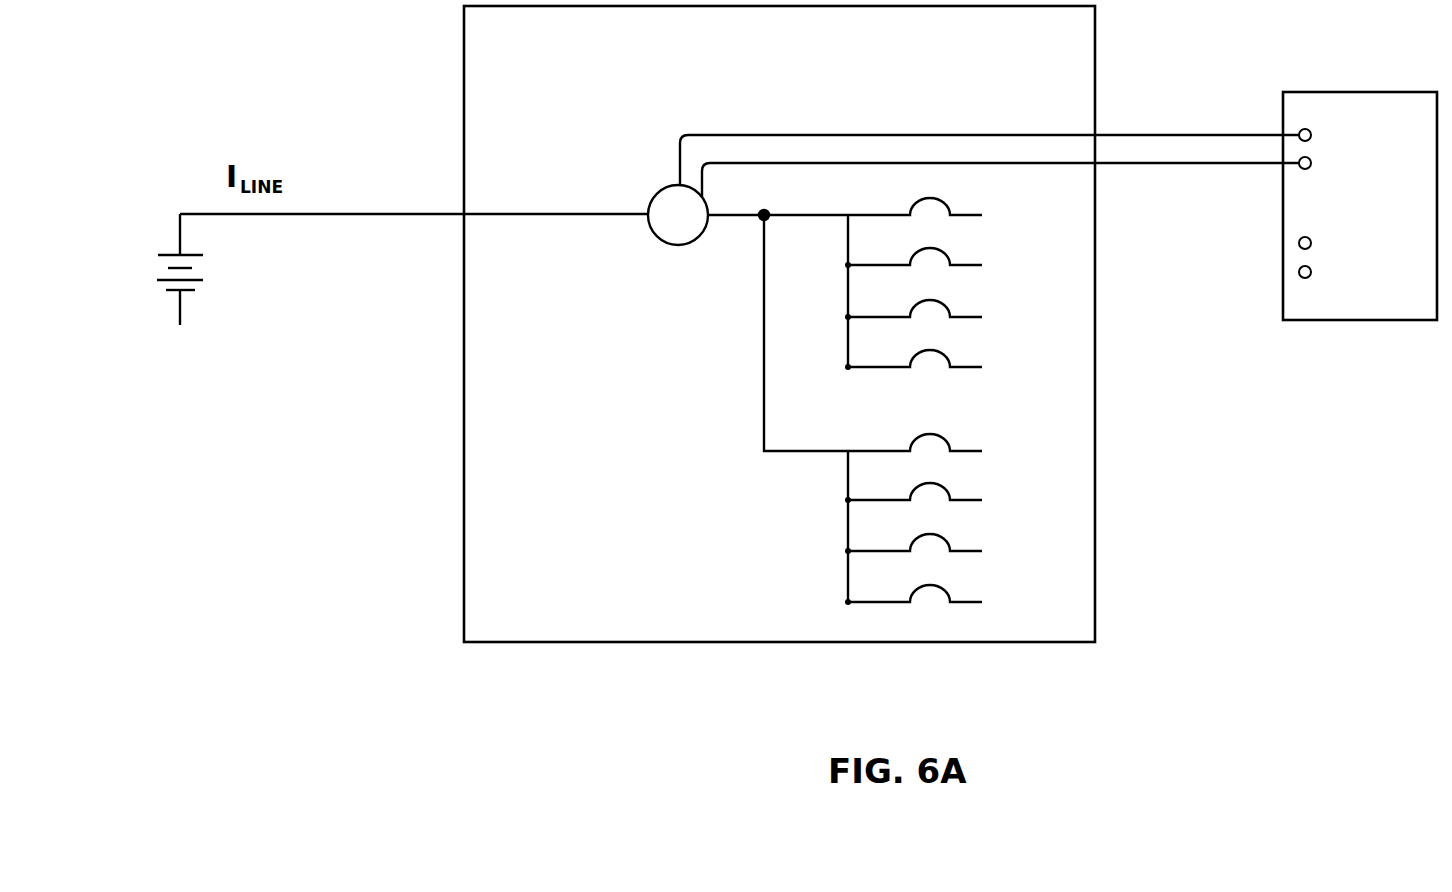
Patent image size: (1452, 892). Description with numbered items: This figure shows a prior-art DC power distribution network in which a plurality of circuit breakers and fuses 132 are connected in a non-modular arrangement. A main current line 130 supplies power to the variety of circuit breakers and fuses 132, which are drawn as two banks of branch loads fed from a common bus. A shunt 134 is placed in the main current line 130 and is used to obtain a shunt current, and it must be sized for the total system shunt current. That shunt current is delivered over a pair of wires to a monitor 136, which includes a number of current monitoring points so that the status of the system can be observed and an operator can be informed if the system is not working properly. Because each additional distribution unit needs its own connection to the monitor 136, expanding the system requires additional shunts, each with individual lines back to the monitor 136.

The main current line 130 is at (290, 208).
The circuit breakers and fuses 132 is at (1010, 345).
The shunt 134 is at (655, 190).
The monitor 136 is at (1387, 284).